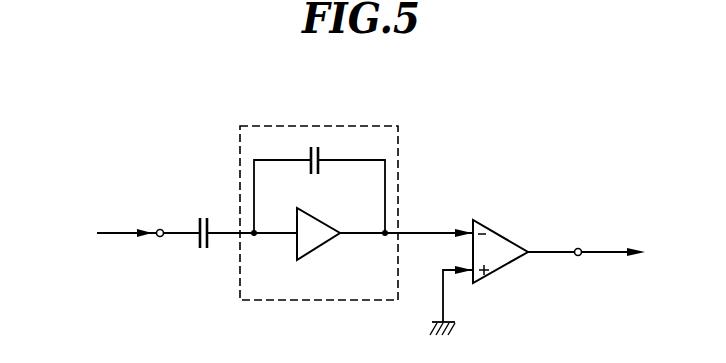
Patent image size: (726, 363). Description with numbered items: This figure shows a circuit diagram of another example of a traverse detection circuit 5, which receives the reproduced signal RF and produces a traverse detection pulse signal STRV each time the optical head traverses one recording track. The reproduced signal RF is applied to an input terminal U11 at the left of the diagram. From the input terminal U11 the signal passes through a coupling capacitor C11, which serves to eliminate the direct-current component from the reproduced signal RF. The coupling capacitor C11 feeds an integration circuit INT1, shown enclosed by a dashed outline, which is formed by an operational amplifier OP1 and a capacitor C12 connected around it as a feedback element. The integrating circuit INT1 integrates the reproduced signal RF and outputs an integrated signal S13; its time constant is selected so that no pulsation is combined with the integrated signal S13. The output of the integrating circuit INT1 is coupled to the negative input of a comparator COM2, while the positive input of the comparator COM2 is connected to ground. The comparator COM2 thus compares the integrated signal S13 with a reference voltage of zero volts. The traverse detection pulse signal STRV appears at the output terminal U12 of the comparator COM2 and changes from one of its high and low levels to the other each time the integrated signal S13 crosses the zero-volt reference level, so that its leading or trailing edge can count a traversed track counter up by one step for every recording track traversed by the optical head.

The reproduced signal RF is at (123, 237).
The input terminal U11 is at (160, 229).
The coupling capacitor C11 is at (210, 226).
The integration circuit INT1 is at (347, 300).
The operational amplifier OP1 is at (312, 252).
The capacitor C12 is at (322, 154).
The integrated signal S13 is at (437, 231).
The comparator COM2 is at (510, 240).
The traverse detection circuit 5 is at (488, 207).
The output terminal U12 is at (578, 256).
The traverse detection pulse signal STRV is at (608, 249).